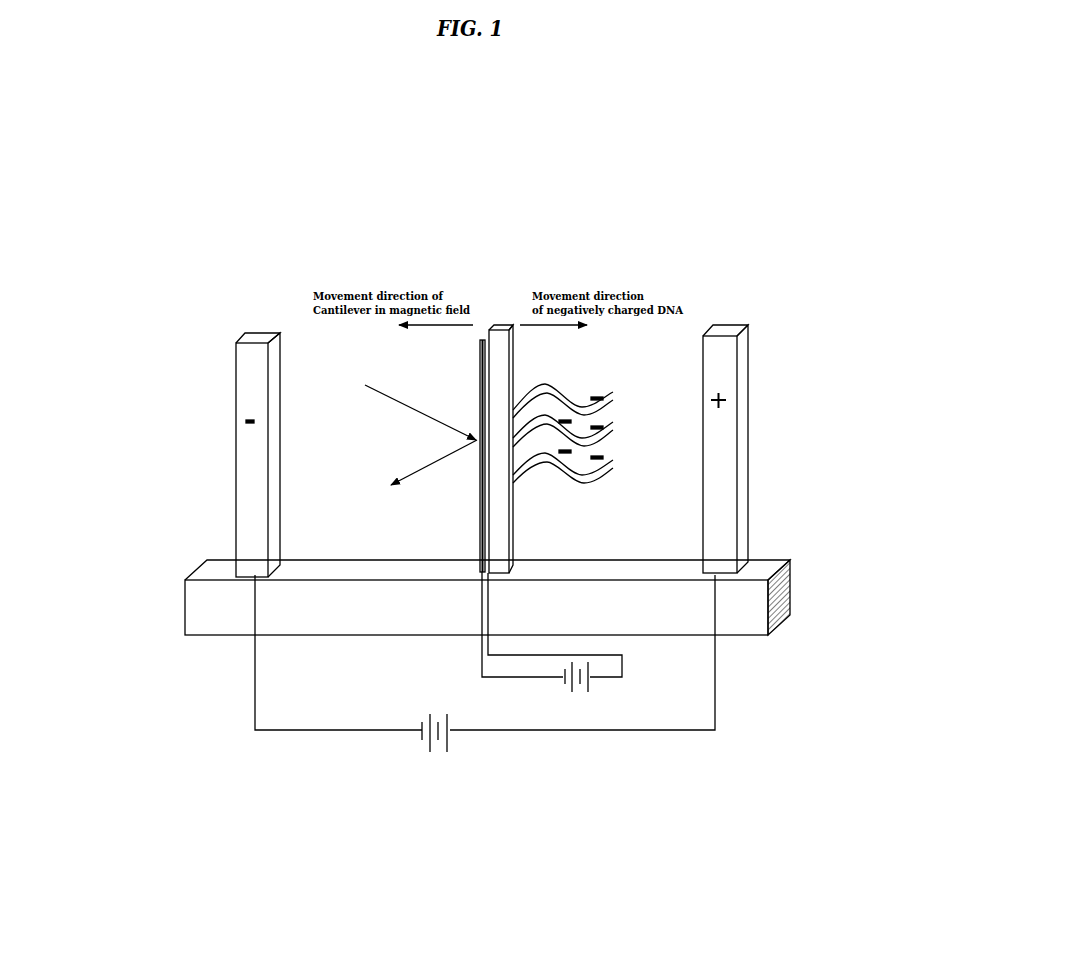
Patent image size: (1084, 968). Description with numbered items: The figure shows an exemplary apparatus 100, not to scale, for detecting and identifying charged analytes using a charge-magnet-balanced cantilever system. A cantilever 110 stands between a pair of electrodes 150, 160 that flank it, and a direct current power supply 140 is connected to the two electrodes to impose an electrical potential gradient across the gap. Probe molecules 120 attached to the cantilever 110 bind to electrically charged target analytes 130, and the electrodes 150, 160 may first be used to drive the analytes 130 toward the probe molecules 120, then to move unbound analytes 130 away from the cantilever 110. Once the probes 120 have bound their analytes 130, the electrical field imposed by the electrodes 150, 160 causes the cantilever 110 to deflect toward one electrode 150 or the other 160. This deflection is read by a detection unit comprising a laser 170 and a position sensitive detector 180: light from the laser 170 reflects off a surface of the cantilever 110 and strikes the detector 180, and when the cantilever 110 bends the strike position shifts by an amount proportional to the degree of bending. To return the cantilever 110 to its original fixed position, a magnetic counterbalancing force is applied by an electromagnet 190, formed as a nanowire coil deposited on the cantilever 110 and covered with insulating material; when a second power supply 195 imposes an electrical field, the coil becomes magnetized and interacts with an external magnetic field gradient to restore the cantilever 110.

The apparatus 100 is at (498, 953).
The cantilever 110 is at (495, 403).
The probe molecules 120 is at (614, 409).
The analyte 130 is at (605, 457).
The direct current power supply 140 is at (413, 755).
The electrode 150 is at (248, 469).
The electrode 160 is at (720, 480).
The laser 170 is at (391, 404).
The position sensitive detector 180 is at (391, 478).
The electromagnet 190 is at (485, 333).
The second power supply 195 is at (588, 695).